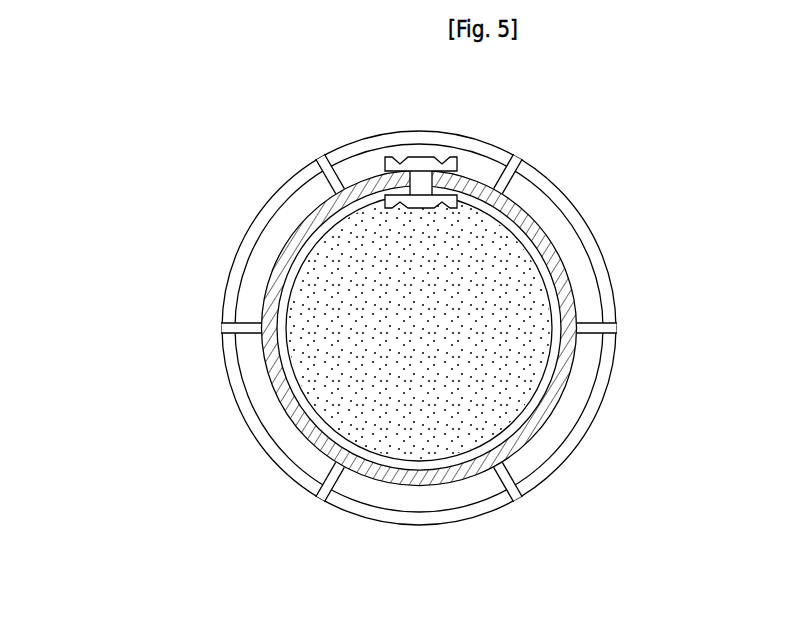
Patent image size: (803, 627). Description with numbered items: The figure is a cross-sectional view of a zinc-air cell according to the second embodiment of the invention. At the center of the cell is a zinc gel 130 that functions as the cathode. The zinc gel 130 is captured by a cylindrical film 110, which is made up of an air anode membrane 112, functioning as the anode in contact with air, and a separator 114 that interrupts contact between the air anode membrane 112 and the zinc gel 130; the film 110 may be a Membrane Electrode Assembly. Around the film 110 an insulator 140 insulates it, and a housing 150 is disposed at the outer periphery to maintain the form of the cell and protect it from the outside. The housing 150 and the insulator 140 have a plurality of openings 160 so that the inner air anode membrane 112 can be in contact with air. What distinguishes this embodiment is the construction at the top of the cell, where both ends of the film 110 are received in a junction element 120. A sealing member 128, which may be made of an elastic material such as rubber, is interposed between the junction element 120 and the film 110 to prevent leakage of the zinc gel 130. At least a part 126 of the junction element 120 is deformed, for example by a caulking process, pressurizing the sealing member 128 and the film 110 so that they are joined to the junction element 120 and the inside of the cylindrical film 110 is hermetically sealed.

The film 110 is at (304, 327).
The air anode membrane 112 is at (278, 375).
The separator 114 is at (292, 268).
The junction element 120 is at (426, 129).
The deformed part of the junction element 126 is at (398, 160).
The sealing member 128 is at (440, 158).
The zinc gel 130 is at (507, 375).
The insulator 140 is at (412, 497).
The housing 150 is at (575, 206).
The openings 160 is at (600, 328).